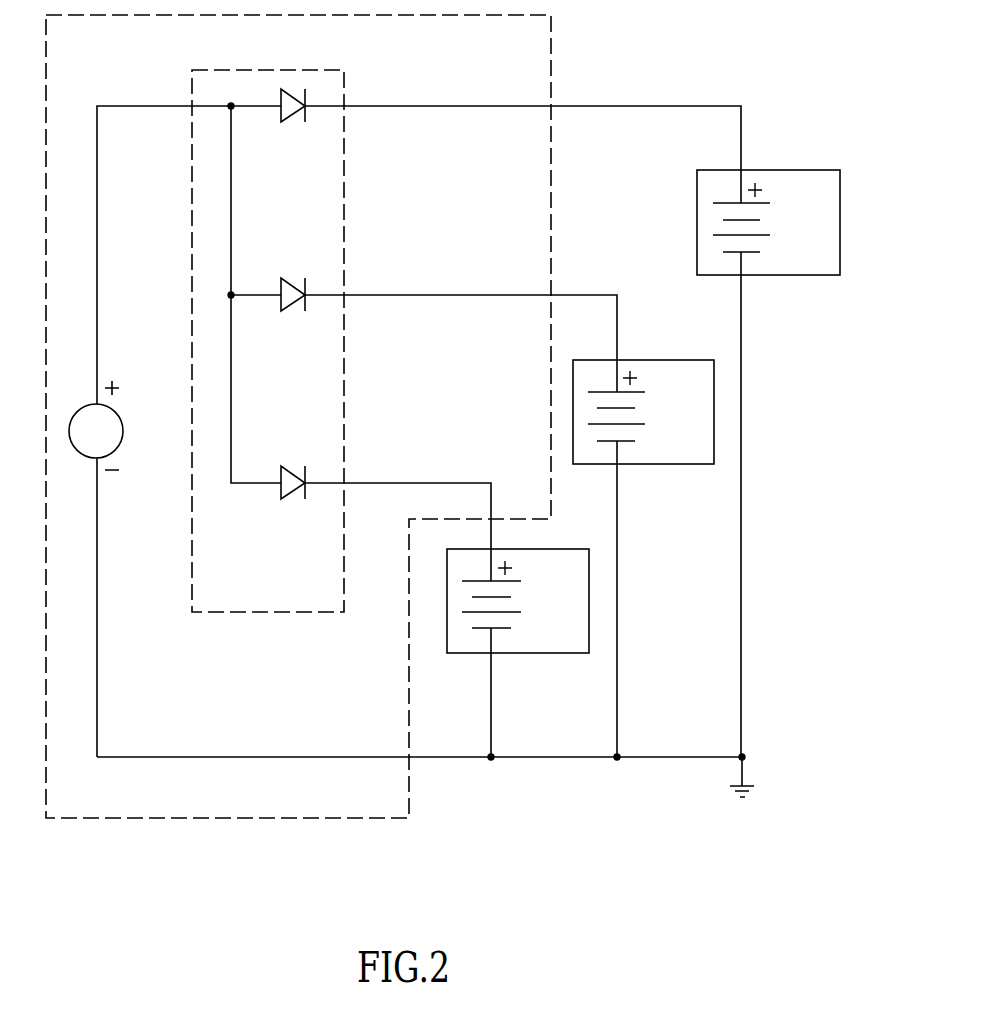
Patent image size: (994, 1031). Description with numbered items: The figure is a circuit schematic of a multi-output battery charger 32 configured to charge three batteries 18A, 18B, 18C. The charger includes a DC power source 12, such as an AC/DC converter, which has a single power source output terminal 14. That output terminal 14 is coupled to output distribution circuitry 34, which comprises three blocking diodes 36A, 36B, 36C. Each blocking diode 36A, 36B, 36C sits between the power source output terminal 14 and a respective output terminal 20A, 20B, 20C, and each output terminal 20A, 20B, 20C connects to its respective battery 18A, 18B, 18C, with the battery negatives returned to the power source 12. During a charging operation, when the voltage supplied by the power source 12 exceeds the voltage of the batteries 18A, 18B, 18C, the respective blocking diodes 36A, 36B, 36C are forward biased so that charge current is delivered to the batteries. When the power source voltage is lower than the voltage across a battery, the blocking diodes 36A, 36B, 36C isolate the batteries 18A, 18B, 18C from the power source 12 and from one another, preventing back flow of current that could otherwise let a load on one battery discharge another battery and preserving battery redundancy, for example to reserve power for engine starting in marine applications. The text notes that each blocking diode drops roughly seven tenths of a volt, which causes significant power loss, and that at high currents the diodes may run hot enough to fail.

The DC power source 12 is at (84, 454).
The power source output terminal 14 is at (145, 105).
The battery 18A is at (775, 170).
The battery 18B is at (647, 360).
The battery 18C is at (525, 654).
The output terminal 20A is at (594, 104).
The output terminal 20B is at (578, 293).
The output terminal 20C is at (493, 500).
The multi-output battery charger 32 is at (121, 819).
The output distribution circuitry 34 is at (258, 613).
The blocking diode 36A is at (289, 122).
The blocking diode 36B is at (291, 311).
The blocking diode 36C is at (293, 467).